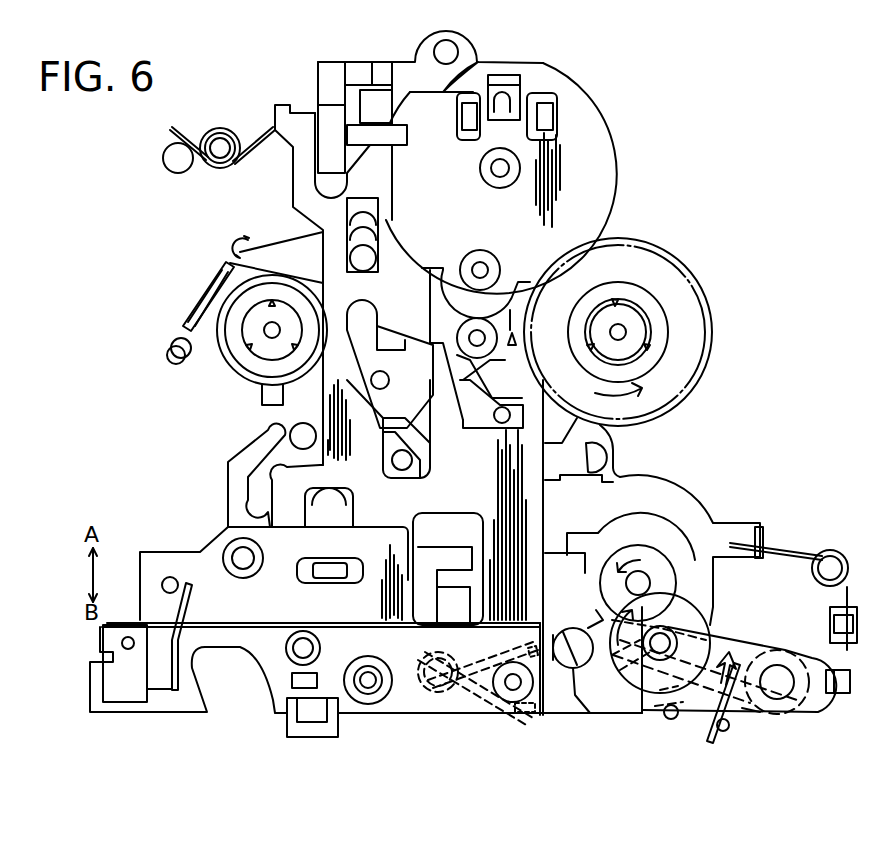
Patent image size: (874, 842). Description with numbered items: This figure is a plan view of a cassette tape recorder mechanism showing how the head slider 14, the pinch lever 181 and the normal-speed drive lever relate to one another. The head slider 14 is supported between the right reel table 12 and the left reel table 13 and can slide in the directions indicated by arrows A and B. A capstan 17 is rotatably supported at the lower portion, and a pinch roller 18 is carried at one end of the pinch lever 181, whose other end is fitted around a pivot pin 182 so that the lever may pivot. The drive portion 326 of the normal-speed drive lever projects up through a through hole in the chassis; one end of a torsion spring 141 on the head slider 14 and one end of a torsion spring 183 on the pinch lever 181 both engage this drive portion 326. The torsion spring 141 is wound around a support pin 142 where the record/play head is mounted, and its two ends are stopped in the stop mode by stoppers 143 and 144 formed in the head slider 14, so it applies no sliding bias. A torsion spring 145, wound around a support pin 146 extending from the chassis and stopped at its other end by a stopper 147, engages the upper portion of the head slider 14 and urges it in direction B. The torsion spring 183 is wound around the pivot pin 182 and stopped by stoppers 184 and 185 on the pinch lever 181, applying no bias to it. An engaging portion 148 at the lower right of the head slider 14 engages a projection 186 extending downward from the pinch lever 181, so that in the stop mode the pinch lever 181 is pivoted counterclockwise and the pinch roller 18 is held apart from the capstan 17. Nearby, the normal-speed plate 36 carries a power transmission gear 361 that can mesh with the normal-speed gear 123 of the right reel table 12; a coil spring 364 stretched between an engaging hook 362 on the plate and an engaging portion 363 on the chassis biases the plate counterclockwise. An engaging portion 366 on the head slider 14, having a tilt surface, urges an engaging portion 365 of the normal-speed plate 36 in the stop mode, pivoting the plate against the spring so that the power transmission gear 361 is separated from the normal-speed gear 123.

The right reel table 12 is at (661, 301).
The left reel table 13 is at (250, 355).
The head slider 14 is at (545, 511).
The capstan 17 is at (645, 568).
The pinch roller 18 is at (698, 608).
The normal-speed plate 36 is at (270, 232).
The normal-speed gear 123 is at (678, 264).
The torsion spring 141 is at (475, 695).
The support pin 142 is at (420, 692).
The stopper 143 is at (527, 727).
The stopper 144 is at (500, 577).
The torsion spring 145 is at (221, 130).
The support pin 146 is at (220, 160).
The stopper 147 is at (170, 172).
The engaging portion 148 is at (664, 716).
The pinch lever 181 is at (716, 640).
The pivot pin 182 is at (798, 706).
The torsion spring 183 is at (738, 712).
The stopper 184 is at (710, 735).
The stopper 185 is at (648, 656).
The projection 186 is at (720, 732).
The drive portion 326 is at (588, 679).
The power transmission gear 361 is at (520, 283).
The engaging hook 362 is at (226, 244).
The engaging portion 363 is at (180, 363).
The coil spring 364 is at (194, 312).
The engaging portion 365 is at (500, 438).
The engaging portion 366 is at (490, 422).